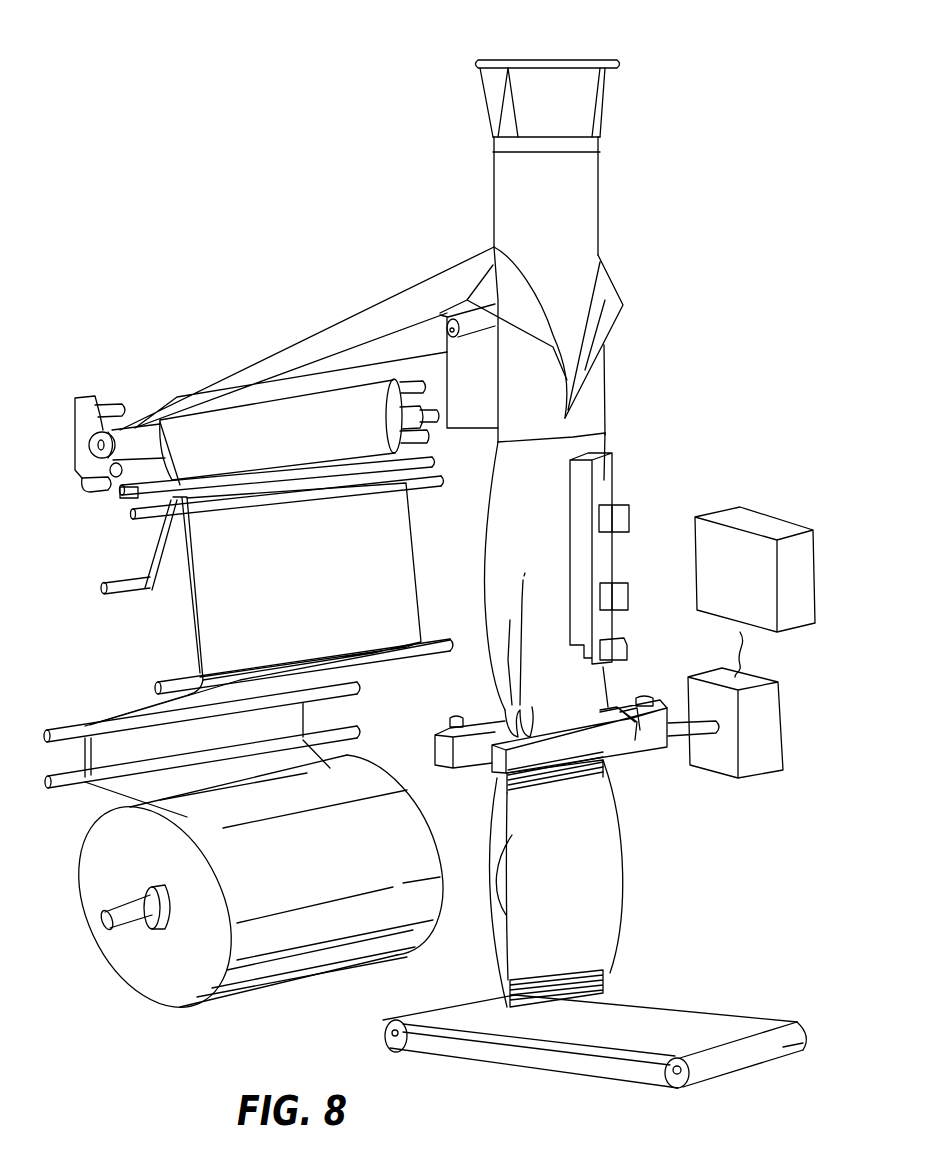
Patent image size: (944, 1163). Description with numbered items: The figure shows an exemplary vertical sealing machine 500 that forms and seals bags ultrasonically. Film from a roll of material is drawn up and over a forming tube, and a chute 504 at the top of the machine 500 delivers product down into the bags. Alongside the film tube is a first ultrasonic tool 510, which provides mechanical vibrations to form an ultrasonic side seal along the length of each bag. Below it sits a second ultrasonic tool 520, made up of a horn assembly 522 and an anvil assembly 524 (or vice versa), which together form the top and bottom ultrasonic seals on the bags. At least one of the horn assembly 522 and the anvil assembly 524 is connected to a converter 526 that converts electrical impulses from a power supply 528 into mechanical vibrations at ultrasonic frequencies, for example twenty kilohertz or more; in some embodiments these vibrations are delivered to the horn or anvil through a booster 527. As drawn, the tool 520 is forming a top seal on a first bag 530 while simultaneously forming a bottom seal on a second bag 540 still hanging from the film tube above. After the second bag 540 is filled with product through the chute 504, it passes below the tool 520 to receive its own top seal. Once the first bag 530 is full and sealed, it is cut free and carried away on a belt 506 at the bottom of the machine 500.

The vertical sealing machine 500 is at (289, 315).
The chute 504 is at (553, 64).
The belt 506 is at (690, 1030).
The first ultrasonic tool 510 is at (605, 487).
The second ultrasonic tool 520 is at (628, 697).
The horn assembly 522 is at (475, 730).
The anvil assembly 524 is at (500, 763).
The converter 526 is at (783, 703).
The booster 527 is at (682, 735).
The power supply 528 is at (765, 522).
The first bag 530 is at (597, 900).
The second bag 540 is at (510, 538).